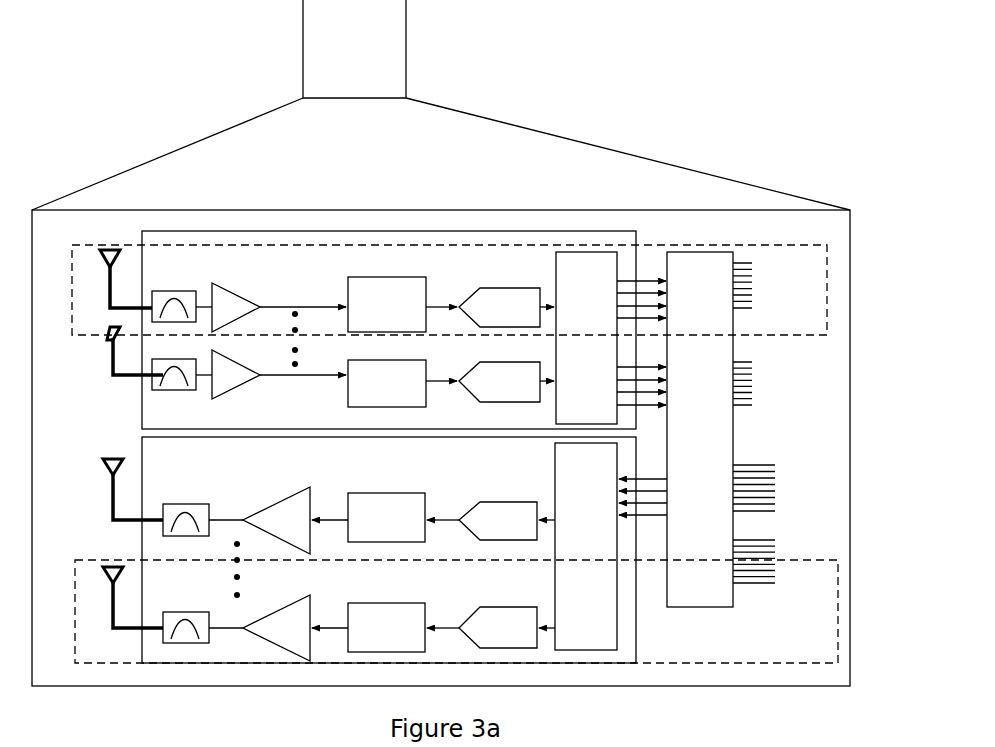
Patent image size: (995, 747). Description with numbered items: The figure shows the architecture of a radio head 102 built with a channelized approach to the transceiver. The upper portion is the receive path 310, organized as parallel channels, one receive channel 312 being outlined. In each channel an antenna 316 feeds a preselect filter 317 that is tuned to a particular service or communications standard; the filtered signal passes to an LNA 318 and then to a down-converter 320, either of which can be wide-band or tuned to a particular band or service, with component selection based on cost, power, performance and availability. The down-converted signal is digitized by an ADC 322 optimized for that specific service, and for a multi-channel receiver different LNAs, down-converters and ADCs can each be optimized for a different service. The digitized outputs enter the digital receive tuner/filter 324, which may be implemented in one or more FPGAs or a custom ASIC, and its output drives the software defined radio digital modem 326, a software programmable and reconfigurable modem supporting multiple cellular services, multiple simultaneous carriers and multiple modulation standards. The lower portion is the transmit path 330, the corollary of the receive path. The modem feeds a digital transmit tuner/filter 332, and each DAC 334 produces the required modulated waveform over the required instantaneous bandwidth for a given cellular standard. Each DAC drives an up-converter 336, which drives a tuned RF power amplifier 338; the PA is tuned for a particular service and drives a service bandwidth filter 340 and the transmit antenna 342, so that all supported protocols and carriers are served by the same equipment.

The radio head 102 is at (301, 42).
The receive path 310 is at (143, 231).
The receive channel 312 is at (828, 244).
The antenna 316 is at (109, 288).
The preselect filter 317 is at (179, 323).
The LNA 318 is at (240, 295).
The down-converter 320 is at (346, 299).
The ADC 322 is at (503, 287).
The digital receive tuner/filter 324 is at (593, 250).
The software defined radio digital modem 326 is at (729, 251).
The transmit path 330 is at (141, 447).
The digital transmit tuner/filter 332 is at (619, 630).
The DAC 334 is at (500, 605).
The up-converter 336 is at (385, 601).
The RF power amplifier 338 is at (281, 607).
The service bandwidth filter 340 is at (185, 610).
The transmit antenna 342 is at (112, 598).